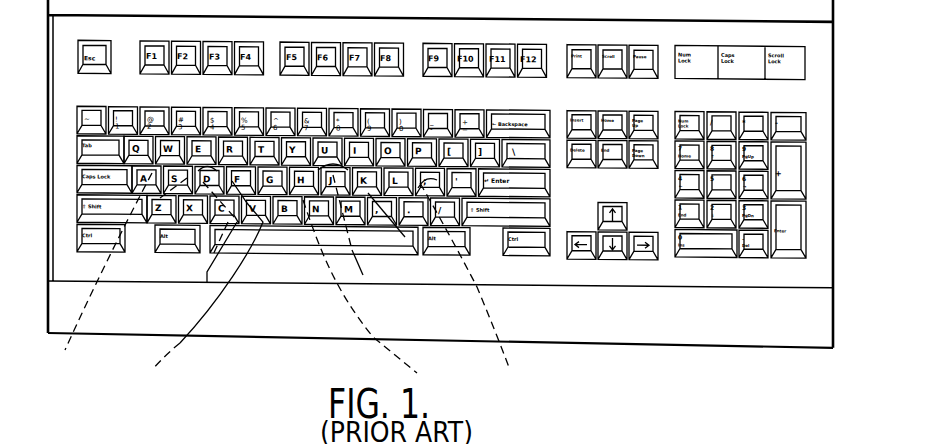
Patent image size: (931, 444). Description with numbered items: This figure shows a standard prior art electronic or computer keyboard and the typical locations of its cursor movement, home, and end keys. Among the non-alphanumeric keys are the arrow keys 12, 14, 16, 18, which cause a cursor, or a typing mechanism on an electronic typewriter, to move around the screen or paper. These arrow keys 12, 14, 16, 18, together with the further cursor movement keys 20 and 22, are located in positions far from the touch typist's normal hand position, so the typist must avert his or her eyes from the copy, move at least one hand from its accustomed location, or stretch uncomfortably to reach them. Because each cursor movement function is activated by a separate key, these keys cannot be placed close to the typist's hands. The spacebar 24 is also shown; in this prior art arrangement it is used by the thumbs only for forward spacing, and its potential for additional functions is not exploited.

The arrow key 12 is at (695, 187).
The arrow key 14 is at (730, 156).
The arrow key 16 is at (755, 192).
The arrow key 18 is at (727, 218).
The cursor movement key 20 is at (684, 158).
The cursor movement key 22 is at (699, 212).
The spacebar 24 is at (303, 243).